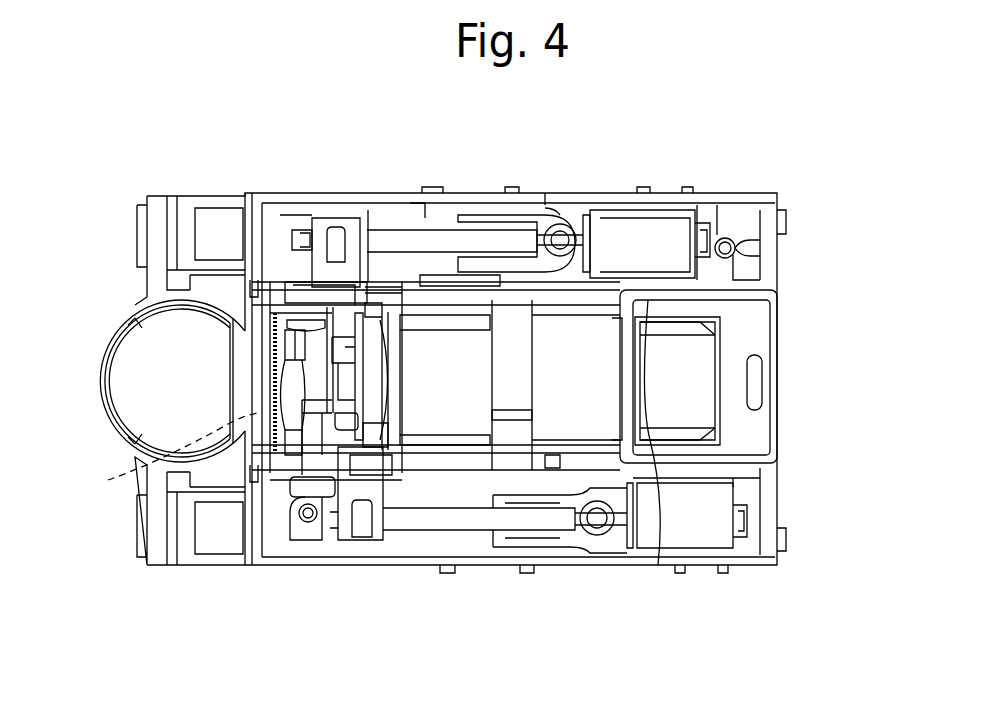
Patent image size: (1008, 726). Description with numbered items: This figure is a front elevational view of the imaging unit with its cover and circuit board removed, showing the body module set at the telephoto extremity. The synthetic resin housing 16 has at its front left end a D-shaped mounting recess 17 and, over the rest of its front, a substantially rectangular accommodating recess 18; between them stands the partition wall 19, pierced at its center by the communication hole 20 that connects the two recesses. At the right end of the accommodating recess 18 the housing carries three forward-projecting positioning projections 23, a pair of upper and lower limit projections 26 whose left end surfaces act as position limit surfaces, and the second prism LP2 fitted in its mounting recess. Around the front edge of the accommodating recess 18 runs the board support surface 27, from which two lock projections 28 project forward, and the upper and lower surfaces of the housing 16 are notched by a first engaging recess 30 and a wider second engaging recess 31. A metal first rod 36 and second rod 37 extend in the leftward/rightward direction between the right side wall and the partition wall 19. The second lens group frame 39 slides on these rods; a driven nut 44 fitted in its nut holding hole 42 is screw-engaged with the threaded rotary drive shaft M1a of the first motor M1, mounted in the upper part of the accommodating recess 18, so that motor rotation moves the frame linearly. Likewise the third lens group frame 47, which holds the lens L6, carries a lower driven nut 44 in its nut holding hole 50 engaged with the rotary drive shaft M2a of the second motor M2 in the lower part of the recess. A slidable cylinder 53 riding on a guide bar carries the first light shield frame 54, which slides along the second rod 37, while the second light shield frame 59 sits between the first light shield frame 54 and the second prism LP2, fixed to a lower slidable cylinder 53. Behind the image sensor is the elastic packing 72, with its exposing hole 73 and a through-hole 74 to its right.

The housing 16 is at (722, 200).
The mounting recess 17 is at (122, 348).
The accommodating recess 18 is at (470, 565).
The partition wall 19 is at (265, 341).
The communication hole 20 is at (164, 455).
The positioning projections 23 is at (760, 466).
The limit projections 26 is at (625, 330).
The board support surface 27 is at (750, 215).
The lock projections 28 is at (737, 247).
The first engaging recess 30 is at (497, 288).
The second engaging recess 31 is at (473, 280).
The first rod 36 is at (552, 302).
The second rod 37 is at (555, 466).
The second lens group frame 39 is at (365, 200).
The nut holding hole 42 is at (312, 200).
The driven nut 44 is at (336, 200).
The third lens group frame 47 is at (405, 345).
The nut holding hole 50 is at (353, 530).
The slidable cylinder 53 is at (422, 196).
The first light shield frame 54 is at (490, 418).
The second light shield frame 59 is at (488, 197).
The packing 72 is at (777, 438).
The exposing hole 73 is at (658, 565).
The through-hole 74 is at (758, 391).
The lens L6 is at (405, 383).
The second prism LP2 is at (680, 330).
The first motor M1 is at (617, 215).
The rotary drive shaft M1a is at (548, 200).
The second motor M2 is at (703, 540).
The rotary drive shaft M2a is at (527, 530).